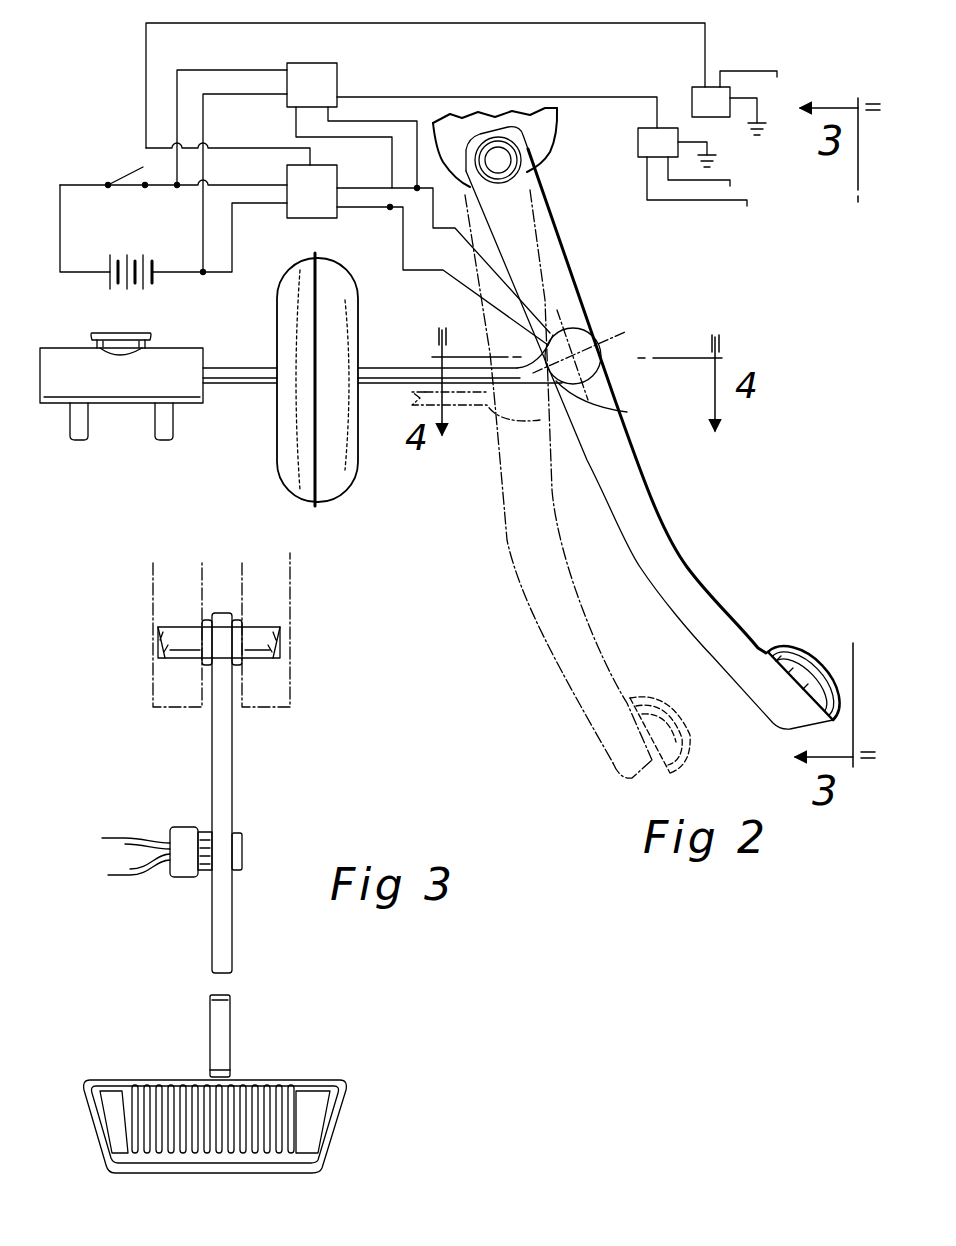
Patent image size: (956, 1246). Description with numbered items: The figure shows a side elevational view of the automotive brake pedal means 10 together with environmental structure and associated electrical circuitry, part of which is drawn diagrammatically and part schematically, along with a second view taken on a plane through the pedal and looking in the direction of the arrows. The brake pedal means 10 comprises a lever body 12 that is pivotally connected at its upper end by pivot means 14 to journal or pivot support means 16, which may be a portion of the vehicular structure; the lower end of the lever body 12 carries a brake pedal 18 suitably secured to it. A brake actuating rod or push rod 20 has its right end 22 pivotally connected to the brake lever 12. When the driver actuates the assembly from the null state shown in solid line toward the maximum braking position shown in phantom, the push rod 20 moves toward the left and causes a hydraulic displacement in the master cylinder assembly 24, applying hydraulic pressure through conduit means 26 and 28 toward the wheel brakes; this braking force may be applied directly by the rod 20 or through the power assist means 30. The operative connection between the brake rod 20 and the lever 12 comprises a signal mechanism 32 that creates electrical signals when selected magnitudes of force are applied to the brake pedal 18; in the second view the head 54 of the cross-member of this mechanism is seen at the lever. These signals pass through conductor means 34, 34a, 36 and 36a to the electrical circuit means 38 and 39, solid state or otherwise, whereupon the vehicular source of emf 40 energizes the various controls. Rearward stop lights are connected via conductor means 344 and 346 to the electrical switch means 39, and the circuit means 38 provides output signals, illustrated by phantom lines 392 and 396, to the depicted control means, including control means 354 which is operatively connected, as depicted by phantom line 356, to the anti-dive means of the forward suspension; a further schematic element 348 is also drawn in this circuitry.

In FIG. 2, the brake pedal means 10 is at (702, 476).
In FIG. 3, the brake pedal means 10 is at (292, 946).
In FIG. 2, the lever body 12 is at (686, 571).
In FIG. 2, the pivot means 14 is at (521, 154).
In FIG. 3, the pivot means 14 is at (263, 628).
In FIG. 2, the journal or pivot support means 16 is at (555, 125).
In FIG. 3, the journal or pivot support means 16 is at (290, 692).
In FIG. 2, the brake pedal 18 is at (818, 648).
In FIG. 3, the brake pedal 18 is at (325, 1108).
In FIG. 2, the brake actuating rod or push rod 20 is at (480, 384).
In FIG. 2, the right end of push rod 22 is at (620, 410).
In FIG. 3, the right end of push rod 22 is at (205, 880).
In FIG. 2, the master cylinder assembly 24 is at (190, 410).
In FIG. 2, the conduit means 26 is at (72, 425).
In FIG. 2, the conduit means 28 is at (155, 428).
In FIG. 2, the power assist means 30 is at (340, 478).
In FIG. 2, the signal mechanism 32 is at (590, 333).
In FIG. 3, the signal mechanism 32 is at (180, 824).
In FIG. 2, the conductor means 34 is at (355, 187).
In FIG. 3, the conductor means 34 is at (116, 838).
In FIG. 2, the conductor means 34a is at (348, 120).
In FIG. 2, the conductor means 36 is at (388, 208).
In FIG. 3, the conductor means 36 is at (112, 876).
In FIG. 2, the conductor means 36a is at (294, 112).
In FIG. 2, the electrical circuit means 38 is at (310, 222).
In FIG. 2, the electrical switch means 39 is at (340, 66).
In FIG. 2, the source of emf 40 is at (150, 284).
In FIG. 3, the head 54 is at (243, 835).
In FIG. 2, the conductor means 344 is at (673, 202).
In FIG. 2, the conductor means 346 is at (732, 184).
In FIG. 2, the sensor module 348 is at (637, 142).
In FIG. 2, the control means 354 is at (722, 118).
In FIG. 2, the phantom line 356 is at (740, 72).
In FIG. 2, the phantom line 392 is at (612, 30).
In FIG. 2, the phantom line 396 is at (482, 97).